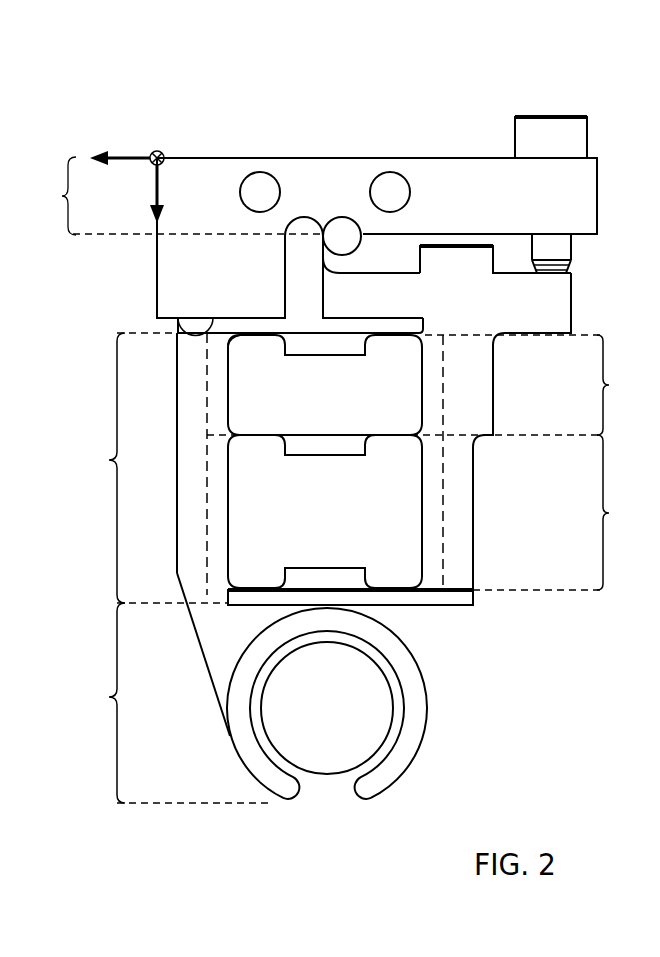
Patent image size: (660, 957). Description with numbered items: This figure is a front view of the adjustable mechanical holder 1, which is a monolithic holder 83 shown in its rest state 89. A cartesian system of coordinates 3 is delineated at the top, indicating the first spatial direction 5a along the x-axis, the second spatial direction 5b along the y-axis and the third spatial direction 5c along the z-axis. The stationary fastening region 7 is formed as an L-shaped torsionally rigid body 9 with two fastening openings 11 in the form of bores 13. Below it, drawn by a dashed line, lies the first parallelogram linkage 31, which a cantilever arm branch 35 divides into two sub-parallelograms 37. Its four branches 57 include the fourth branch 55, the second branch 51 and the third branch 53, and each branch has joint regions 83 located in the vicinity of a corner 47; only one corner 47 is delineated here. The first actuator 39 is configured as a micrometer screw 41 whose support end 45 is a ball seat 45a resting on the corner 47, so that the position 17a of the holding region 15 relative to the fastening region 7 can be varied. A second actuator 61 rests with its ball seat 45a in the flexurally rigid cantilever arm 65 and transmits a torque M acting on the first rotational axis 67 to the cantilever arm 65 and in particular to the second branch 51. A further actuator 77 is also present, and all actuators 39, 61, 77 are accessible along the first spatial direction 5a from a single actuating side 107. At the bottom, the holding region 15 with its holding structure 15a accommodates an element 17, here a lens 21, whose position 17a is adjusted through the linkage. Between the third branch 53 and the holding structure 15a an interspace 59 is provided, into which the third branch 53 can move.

The adjustable mechanical holder 1 is at (345, 191).
The monolithic holder / joint regions 83 is at (240, 346).
The rest state 89 is at (336, 93).
The first spatial direction 5a is at (156, 190).
The second spatial direction 5b is at (123, 154).
The third spatial direction 5c is at (158, 151).
The cartesian system of coordinates 3 is at (168, 171).
The stationary fastening region 7 is at (229, 268).
The L-shaped torsionally rigid body 9 is at (452, 173).
The fastening openings 11 is at (323, 152).
The bores 13 is at (257, 174).
The first rotational axis 67 is at (323, 234).
The actuator 77 is at (478, 253).
The actuating side 107 is at (513, 110).
The second actuator 61 is at (574, 134).
The ball seat 45a is at (565, 271).
The flexurally rigid cantilever arm 65 is at (565, 311).
The micrometer screw 41 is at (231, 312).
The first actuator 39 is at (231, 312).
The support end 45 is at (182, 322).
The torque M is at (307, 257).
The first parallelogram linkage 31 is at (361, 484).
The cantilever arm branch 35 is at (323, 461).
The sub-parallelograms 37 is at (557, 461).
The corner 47 is at (234, 340).
The branches 57 is at (323, 461).
The fourth branch 55 is at (325, 511).
The second branch 51 is at (325, 511).
The third branch 53 is at (325, 511).
The interspace 59 is at (345, 602).
The holding region 15 is at (284, 718).
The holding structure 15a is at (214, 657).
The element 17 is at (327, 736).
The position 17a is at (327, 776).
The lens 21 is at (360, 705).